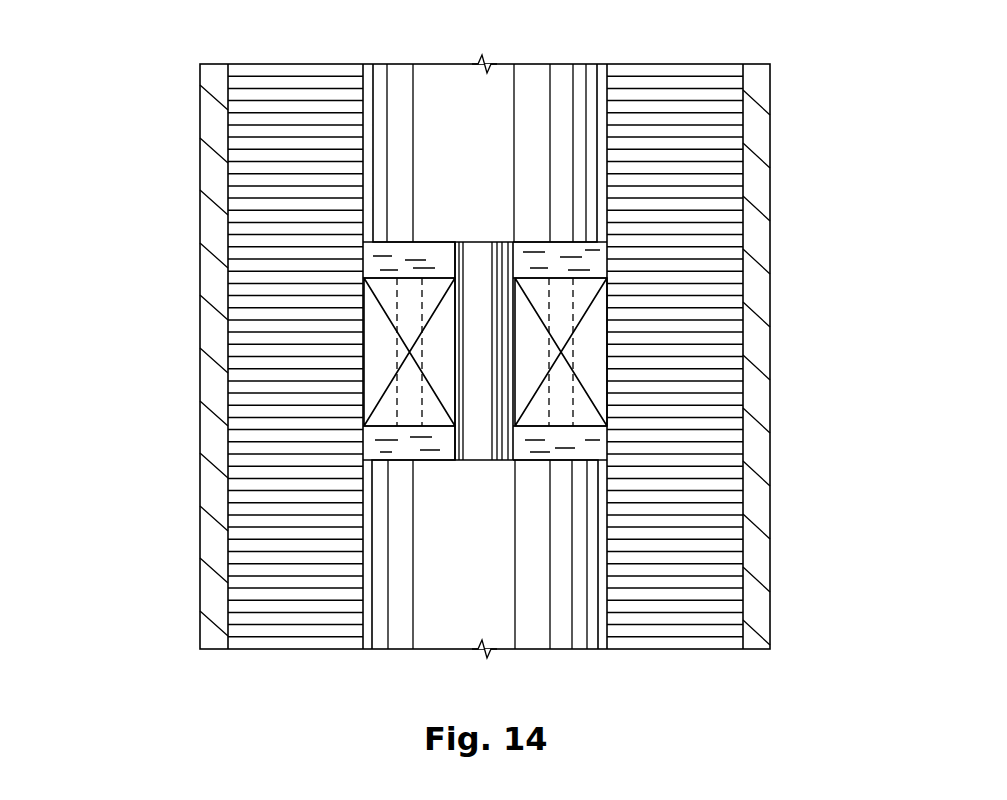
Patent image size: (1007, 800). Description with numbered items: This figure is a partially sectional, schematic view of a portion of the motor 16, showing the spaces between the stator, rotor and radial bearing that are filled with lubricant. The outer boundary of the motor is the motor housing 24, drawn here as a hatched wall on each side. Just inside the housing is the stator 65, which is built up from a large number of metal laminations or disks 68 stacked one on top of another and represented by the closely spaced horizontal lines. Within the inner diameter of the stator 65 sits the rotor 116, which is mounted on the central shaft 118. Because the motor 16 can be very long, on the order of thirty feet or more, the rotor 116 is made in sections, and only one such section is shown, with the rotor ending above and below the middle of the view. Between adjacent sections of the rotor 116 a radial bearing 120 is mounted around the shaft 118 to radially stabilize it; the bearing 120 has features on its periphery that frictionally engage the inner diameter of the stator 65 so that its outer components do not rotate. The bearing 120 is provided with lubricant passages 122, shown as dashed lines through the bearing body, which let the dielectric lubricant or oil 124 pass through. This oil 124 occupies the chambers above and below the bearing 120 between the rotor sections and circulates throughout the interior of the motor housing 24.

The motor 16 is at (176, 140).
The motor housing 24 is at (200, 218).
The stator 65 is at (292, 68).
The metal laminations or disks 68 is at (243, 277).
The rotor 116 is at (529, 80).
The shaft 118 is at (473, 440).
The radial bearing 120 is at (592, 343).
The lubricant passages 122 is at (575, 408).
The dielectric lubricant or oil 124 is at (595, 443).